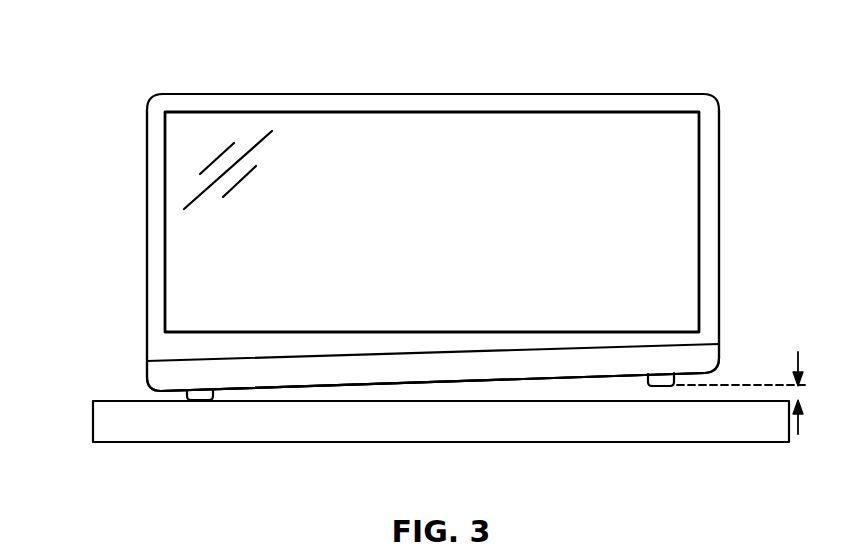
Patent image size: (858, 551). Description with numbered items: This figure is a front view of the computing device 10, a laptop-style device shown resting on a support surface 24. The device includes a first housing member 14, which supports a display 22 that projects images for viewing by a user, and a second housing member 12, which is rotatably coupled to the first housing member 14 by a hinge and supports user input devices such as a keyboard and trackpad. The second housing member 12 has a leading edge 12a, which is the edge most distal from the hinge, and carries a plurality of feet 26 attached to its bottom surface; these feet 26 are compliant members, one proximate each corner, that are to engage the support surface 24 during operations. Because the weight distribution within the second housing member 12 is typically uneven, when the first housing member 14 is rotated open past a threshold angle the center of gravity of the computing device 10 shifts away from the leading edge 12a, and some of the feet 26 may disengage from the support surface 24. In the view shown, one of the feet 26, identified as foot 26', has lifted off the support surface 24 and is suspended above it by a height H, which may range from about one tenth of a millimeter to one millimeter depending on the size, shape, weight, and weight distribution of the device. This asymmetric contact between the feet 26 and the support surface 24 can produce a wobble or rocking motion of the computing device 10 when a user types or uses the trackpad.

The computing device 10 is at (738, 30).
The first housing member 14 is at (283, 93).
The display 22 is at (405, 112).
The second housing member 12 is at (148, 372).
The leading edge 12a is at (393, 380).
The support surface 24 is at (96, 402).
The feet 26 is at (224, 432).
The foot 26' is at (661, 424).
The height H is at (758, 393).